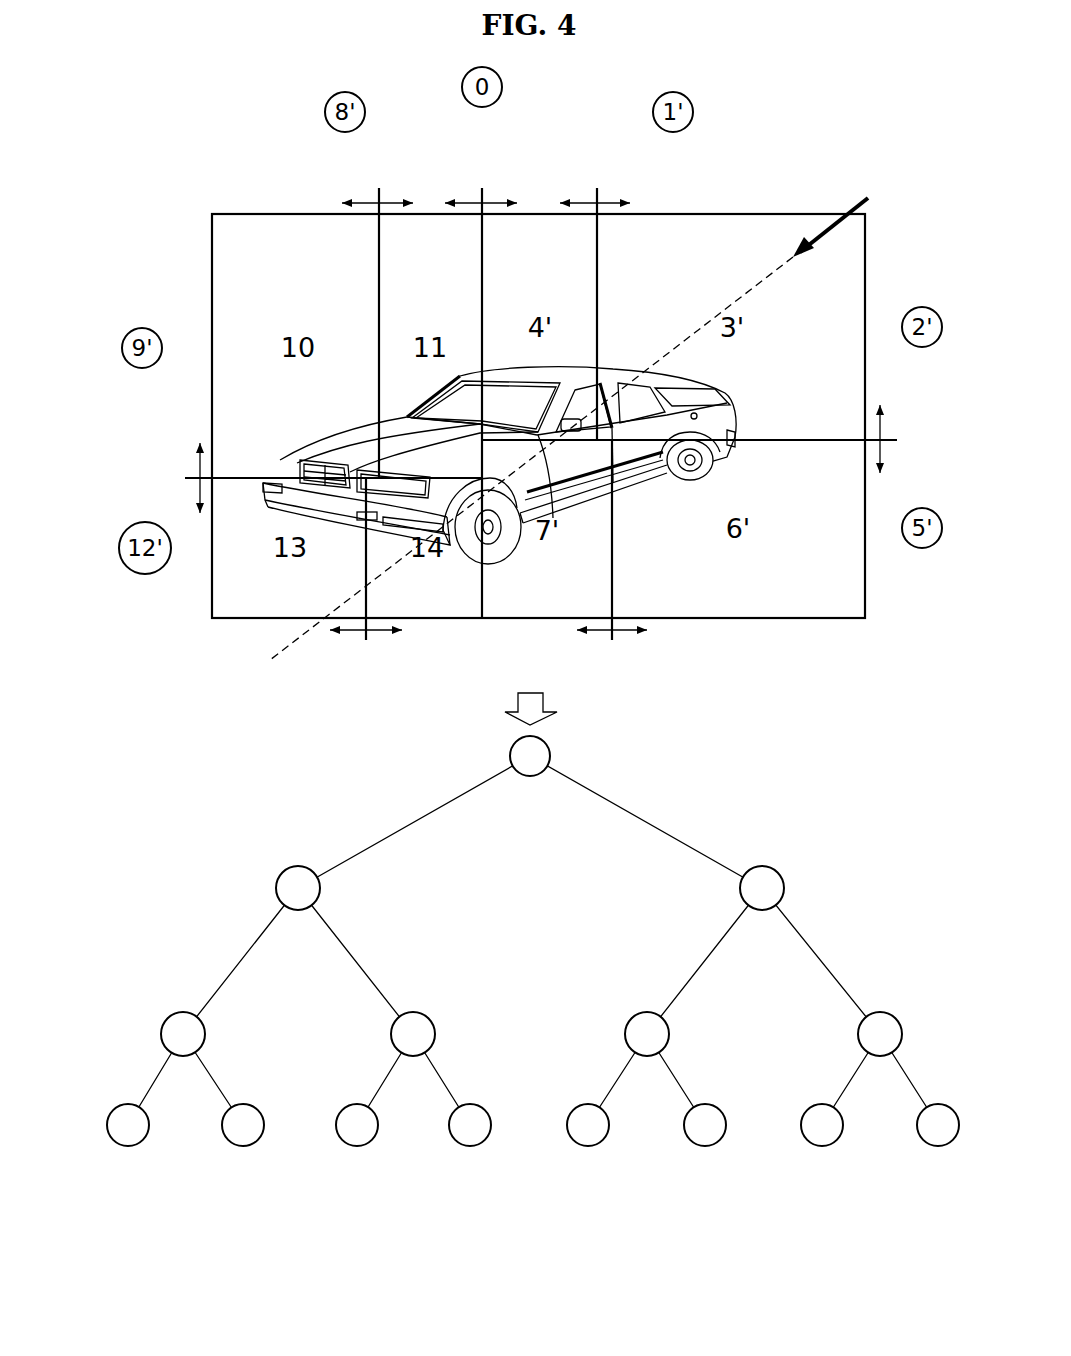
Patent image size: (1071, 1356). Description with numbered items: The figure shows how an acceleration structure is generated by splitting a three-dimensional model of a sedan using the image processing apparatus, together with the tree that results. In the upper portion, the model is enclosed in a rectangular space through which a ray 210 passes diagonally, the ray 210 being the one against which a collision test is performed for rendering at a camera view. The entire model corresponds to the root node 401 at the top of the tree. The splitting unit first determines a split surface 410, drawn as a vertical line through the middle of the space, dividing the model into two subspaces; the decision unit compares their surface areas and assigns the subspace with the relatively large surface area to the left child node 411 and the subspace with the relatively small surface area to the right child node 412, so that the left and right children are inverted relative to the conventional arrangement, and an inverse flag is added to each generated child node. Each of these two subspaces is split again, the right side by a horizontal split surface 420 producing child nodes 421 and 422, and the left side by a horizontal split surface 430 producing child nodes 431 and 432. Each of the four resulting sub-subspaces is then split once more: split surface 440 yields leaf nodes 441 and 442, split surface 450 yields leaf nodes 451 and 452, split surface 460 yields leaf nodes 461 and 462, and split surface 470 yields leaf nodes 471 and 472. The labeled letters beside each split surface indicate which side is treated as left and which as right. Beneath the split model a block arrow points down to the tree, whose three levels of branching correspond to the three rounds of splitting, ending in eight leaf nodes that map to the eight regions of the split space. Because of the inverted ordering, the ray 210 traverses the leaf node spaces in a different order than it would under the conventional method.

The ray 210 is at (826, 230).
The root node 401 is at (530, 777).
The split surface 410 is at (482, 188).
The left child node 411 is at (300, 911).
The right child node 412 is at (764, 911).
The right horizontal splitting line 420 is at (897, 440).
The node 2' 421 is at (186, 1057).
The node 5' 422 is at (415, 1057).
The left horizontal splitting line 430 is at (185, 478).
The node 9' 431 is at (649, 1057).
The node 12' 432 is at (882, 1057).
The upper right vertical splitting line 440 is at (597, 188).
The leaf node 3' 441 is at (129, 1147).
The leaf node 4' 442 is at (245, 1147).
The lower right vertical splitting line 450 is at (612, 640).
The leaf node 6' 451 is at (359, 1147).
The leaf node 7' 452 is at (473, 1147).
The upper left vertical splitting line 460 is at (379, 188).
The leaf node 10 461 is at (590, 1147).
The leaf node 11 462 is at (707, 1147).
The lower left vertical splitting line 470 is at (366, 640).
The leaf node 13 471 is at (824, 1147).
The leaf node 14 472 is at (940, 1147).